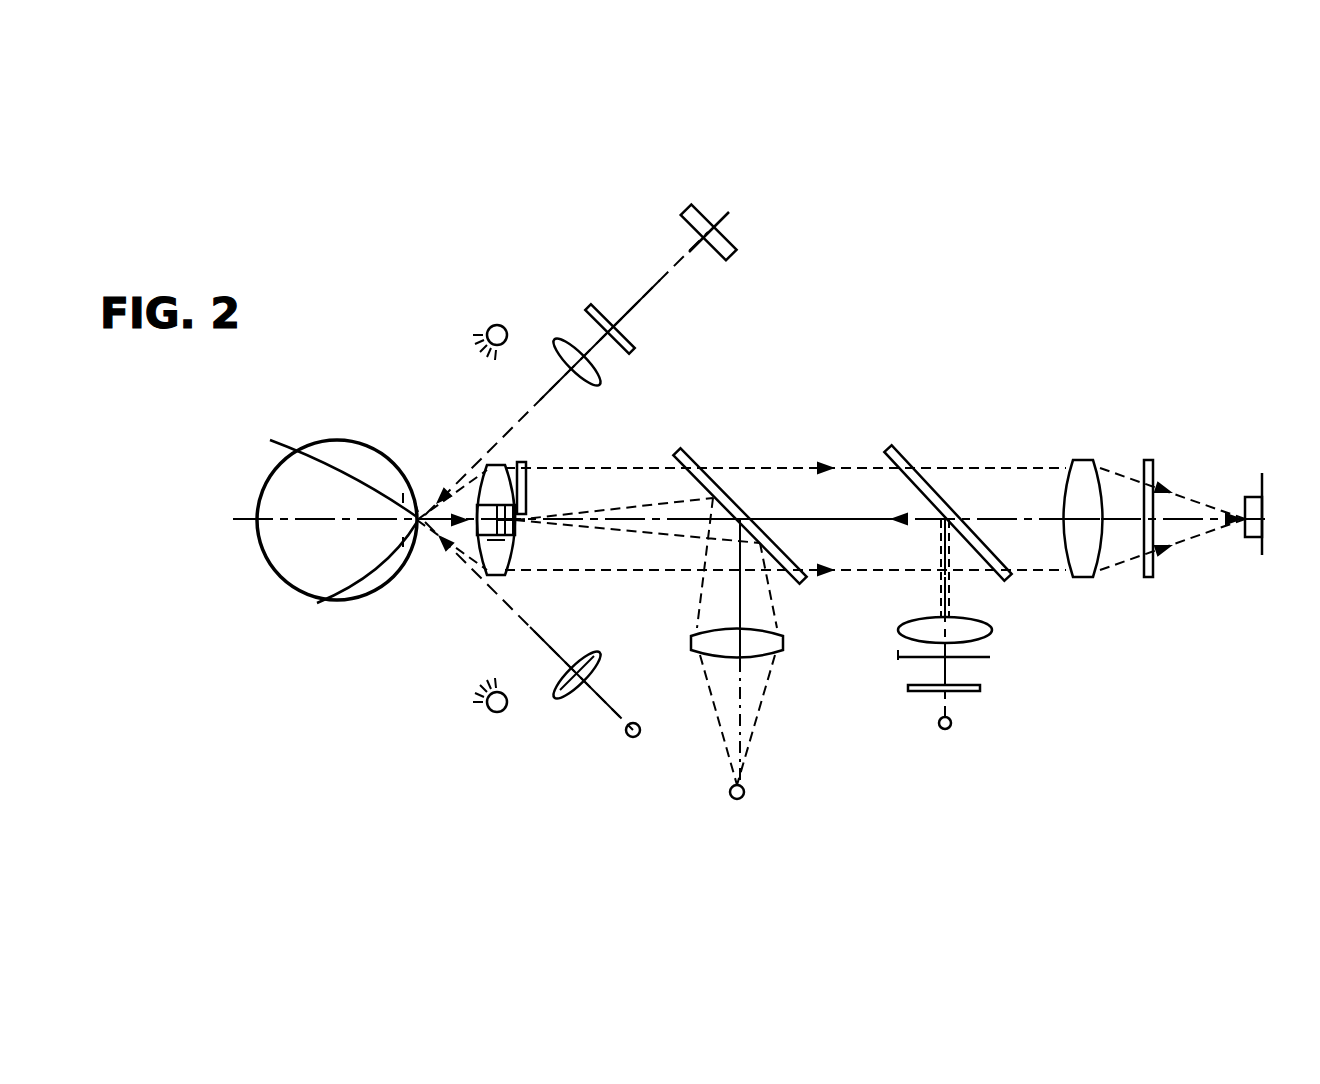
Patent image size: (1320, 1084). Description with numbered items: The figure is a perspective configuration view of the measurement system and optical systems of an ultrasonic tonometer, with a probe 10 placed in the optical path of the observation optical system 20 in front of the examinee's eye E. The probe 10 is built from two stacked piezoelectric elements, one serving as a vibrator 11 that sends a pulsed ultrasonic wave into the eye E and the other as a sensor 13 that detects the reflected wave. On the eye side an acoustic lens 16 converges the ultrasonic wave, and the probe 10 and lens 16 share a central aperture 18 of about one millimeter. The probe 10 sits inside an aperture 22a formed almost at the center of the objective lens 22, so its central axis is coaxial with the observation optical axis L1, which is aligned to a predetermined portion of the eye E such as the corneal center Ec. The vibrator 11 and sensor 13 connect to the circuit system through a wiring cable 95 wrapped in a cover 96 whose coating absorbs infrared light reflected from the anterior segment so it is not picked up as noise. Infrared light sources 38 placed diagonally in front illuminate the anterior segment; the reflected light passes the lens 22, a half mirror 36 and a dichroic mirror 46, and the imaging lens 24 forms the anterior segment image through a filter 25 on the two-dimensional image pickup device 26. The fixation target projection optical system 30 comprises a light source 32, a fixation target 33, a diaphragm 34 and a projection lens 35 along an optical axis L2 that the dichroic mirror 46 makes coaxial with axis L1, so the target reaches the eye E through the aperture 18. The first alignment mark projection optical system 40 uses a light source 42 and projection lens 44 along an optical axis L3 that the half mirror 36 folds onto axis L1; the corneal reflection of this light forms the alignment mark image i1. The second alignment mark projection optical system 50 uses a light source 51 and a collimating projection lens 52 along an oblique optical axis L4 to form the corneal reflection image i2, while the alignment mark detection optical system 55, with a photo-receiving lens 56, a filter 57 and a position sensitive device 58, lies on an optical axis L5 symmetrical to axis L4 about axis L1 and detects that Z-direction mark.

The examinee's eye E is at (272, 578).
The alignment mark image i1 is at (329, 453).
The alignment mark image i2 is at (359, 591).
The corneal apex Ec is at (414, 500).
The aperture 18 is at (495, 520).
The objective lens 22 is at (493, 483).
The aperture 22a is at (497, 540).
The acoustic lens 16 is at (480, 530).
The probe 10 is at (541, 622).
The vibrator 11 is at (500, 535).
The sensor 13 is at (515, 525).
The wiring cable 95 is at (535, 460).
The cover 96 is at (528, 495).
The light source 38 is at (497, 325).
The half mirror 36 is at (690, 457).
The observation optical axis L1 is at (775, 518).
The dichroic mirror 46 is at (895, 450).
The observation optical system 20 is at (957, 437).
The imaging lens 24 is at (1083, 462).
The filter 25 is at (1148, 460).
The two-dimensional image pickup device 26 is at (1250, 497).
The optical axis L2 is at (948, 590).
The fixation target projection optical system 30 is at (998, 628).
The projection lens 35 is at (900, 630).
The diaphragm 34 is at (912, 660).
The fixation target 33 is at (960, 690).
The light source 32 is at (948, 732).
The optical axis L3 is at (740, 598).
The first alignment mark projection optical system 40 is at (795, 640).
The projection lens 44 is at (690, 650).
The light source 42 is at (740, 800).
The projection lens 52 is at (600, 668).
The light source 51 is at (634, 740).
The optical axis L4 is at (607, 707).
The second alignment mark projection optical system 50 is at (568, 753).
The photo-receiving lens 56 is at (556, 338).
The filter 57 is at (586, 300).
The position sensitive device 58 is at (712, 210).
The optical axis L5 is at (658, 287).
The alignment mark detection optical system 55 is at (600, 167).